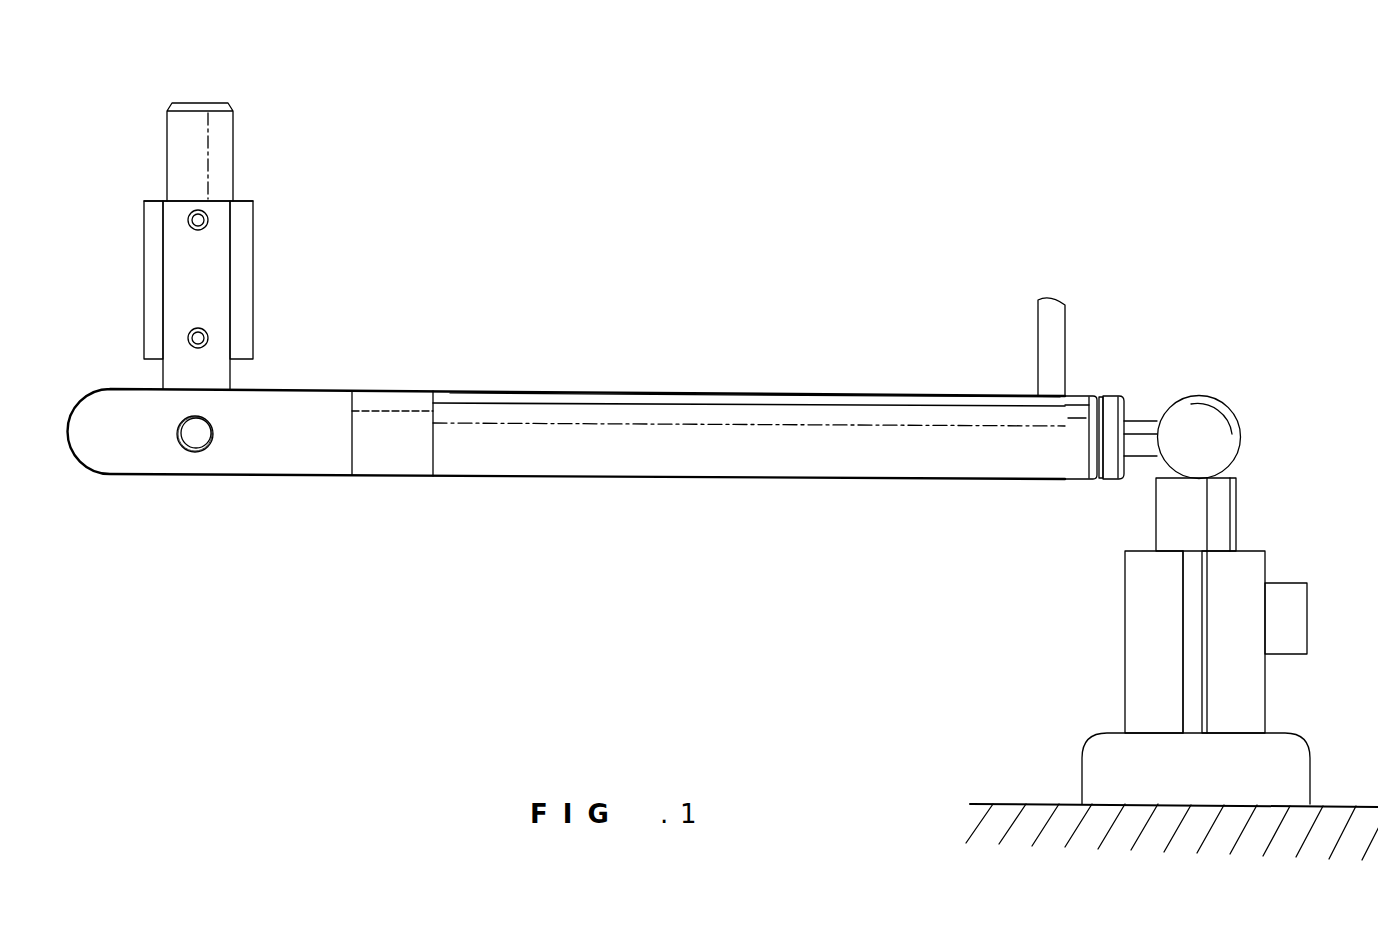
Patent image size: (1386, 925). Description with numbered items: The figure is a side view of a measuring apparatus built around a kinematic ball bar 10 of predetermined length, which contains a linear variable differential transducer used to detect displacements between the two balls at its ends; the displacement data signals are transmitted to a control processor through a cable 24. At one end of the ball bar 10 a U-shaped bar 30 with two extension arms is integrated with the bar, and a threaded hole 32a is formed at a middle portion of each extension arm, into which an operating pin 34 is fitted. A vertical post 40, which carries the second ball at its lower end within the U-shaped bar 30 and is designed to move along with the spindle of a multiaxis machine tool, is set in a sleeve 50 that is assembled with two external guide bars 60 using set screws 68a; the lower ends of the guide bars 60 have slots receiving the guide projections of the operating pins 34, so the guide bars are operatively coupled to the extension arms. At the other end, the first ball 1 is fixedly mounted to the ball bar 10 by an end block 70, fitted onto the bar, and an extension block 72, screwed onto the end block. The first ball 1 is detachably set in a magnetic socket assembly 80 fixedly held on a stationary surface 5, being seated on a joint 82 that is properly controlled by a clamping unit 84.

The first ball 1 is at (1222, 405).
The stationary surface 5 is at (995, 806).
The kinematic ball bar 10 is at (690, 390).
The cable 24 is at (1050, 322).
The U-shaped bar 30 is at (287, 480).
The threaded hole 32a is at (178, 418).
The operating pin 34 is at (196, 441).
The vertical post 40 is at (208, 100).
The sleeve 50 is at (245, 255).
The guide bar 60 is at (172, 277).
The set screw 68a is at (208, 337).
The end block 70 is at (1088, 402).
The extension block 72 is at (1115, 397).
The magnetic socket assembly 80 is at (1270, 568).
The joint 82 is at (1170, 523).
The clamping unit 84 is at (1293, 626).